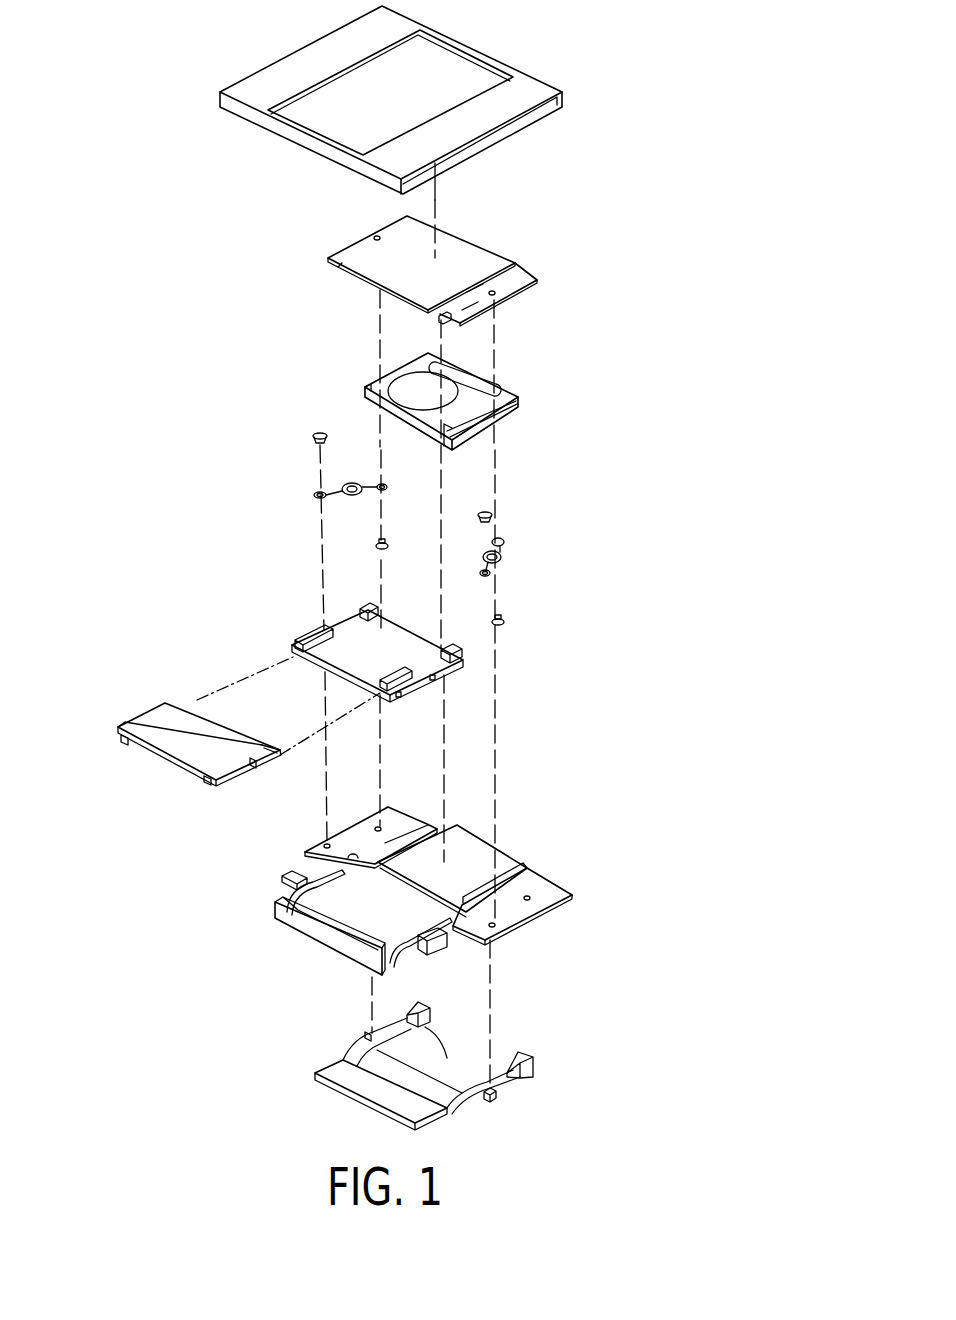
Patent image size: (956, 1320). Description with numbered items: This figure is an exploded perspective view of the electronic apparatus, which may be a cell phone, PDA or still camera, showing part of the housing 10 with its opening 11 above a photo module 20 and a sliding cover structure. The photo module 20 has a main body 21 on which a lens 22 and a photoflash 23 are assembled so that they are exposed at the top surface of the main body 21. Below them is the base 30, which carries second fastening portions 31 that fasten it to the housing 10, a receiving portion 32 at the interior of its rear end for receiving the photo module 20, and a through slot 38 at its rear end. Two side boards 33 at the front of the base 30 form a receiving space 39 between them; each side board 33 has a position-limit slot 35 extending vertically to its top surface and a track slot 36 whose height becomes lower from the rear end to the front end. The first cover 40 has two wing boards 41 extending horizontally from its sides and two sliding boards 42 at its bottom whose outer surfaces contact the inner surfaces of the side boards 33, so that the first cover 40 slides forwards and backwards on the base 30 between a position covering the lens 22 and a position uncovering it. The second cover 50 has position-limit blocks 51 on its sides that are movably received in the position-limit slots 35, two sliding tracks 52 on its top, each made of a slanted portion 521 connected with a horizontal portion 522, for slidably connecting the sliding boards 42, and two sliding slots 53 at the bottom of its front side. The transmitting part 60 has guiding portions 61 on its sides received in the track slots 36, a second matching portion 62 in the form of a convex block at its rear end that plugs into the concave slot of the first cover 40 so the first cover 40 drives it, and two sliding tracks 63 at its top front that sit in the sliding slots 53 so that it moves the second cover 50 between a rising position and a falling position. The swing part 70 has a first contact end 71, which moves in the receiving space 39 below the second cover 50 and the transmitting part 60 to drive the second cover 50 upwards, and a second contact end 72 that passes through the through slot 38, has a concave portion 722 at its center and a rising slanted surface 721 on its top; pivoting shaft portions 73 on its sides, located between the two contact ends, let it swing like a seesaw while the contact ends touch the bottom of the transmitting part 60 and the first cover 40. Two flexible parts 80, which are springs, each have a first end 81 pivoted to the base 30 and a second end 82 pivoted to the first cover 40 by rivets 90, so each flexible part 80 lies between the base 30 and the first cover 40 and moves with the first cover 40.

The housing 10 is at (577, 95).
The opening 11 is at (448, 73).
The photo module 20 is at (352, 388).
The main body 21 is at (473, 407).
The lens 22 is at (407, 388).
The photoflash 23 is at (472, 383).
The base 30 is at (262, 925).
The second fastening portion 31 is at (525, 895).
The receiving portion 32 is at (465, 870).
The side board 33 is at (408, 957).
The position-limit slot 35 is at (313, 908).
The track slot 36 is at (395, 968).
The through slot 38 is at (520, 870).
The receiving space 39 is at (396, 917).
The first cover 40 is at (513, 242).
The wing board 41 is at (525, 293).
The sliding board 42 is at (443, 320).
The second cover 50 is at (132, 712).
The position-limit block 51 is at (257, 750).
The sliding track 52 is at (203, 847).
The slanted portion 521 is at (278, 760).
The horizontal portion 522 is at (238, 777).
The sliding slot 53 is at (125, 742).
The transmitting part 60 is at (465, 672).
The guiding portion 61 is at (462, 683).
The second matching portion 62 is at (362, 607).
The sliding track 63 is at (313, 633).
The swing part 70 is at (303, 1055).
The first contact end 71 is at (347, 1094).
The second contact end 72 is at (532, 1070).
The slanted surface 721 is at (530, 1055).
The concave portion 722 is at (404, 1020).
The pivoting shaft portion 73 is at (497, 1097).
The flexible part 80 is at (513, 553).
The first end 81 is at (490, 577).
The second end 82 is at (503, 543).
The rivet 90 is at (507, 625).